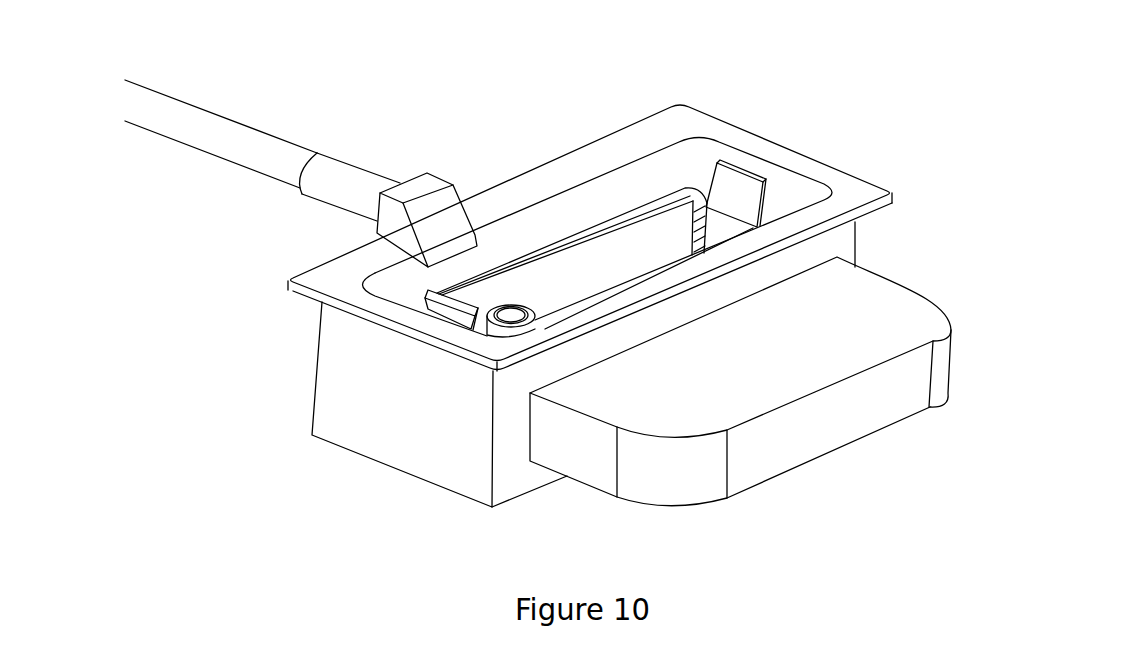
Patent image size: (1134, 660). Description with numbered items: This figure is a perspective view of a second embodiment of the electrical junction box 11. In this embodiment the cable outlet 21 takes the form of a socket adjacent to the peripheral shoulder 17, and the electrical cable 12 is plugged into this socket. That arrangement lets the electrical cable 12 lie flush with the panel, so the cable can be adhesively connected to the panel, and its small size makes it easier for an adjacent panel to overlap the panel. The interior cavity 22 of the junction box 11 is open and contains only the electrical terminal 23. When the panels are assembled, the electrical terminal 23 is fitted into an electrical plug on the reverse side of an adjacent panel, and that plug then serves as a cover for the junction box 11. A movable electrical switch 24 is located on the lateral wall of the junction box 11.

The junction box 11 is at (845, 131).
The electrical cable 12 is at (240, 137).
The peripheral shoulder 17 is at (883, 206).
The cable outlet 21 is at (451, 202).
The interior cavity 22 is at (655, 185).
The electrical terminal 23 is at (515, 304).
The movable electrical switch 24 is at (828, 430).